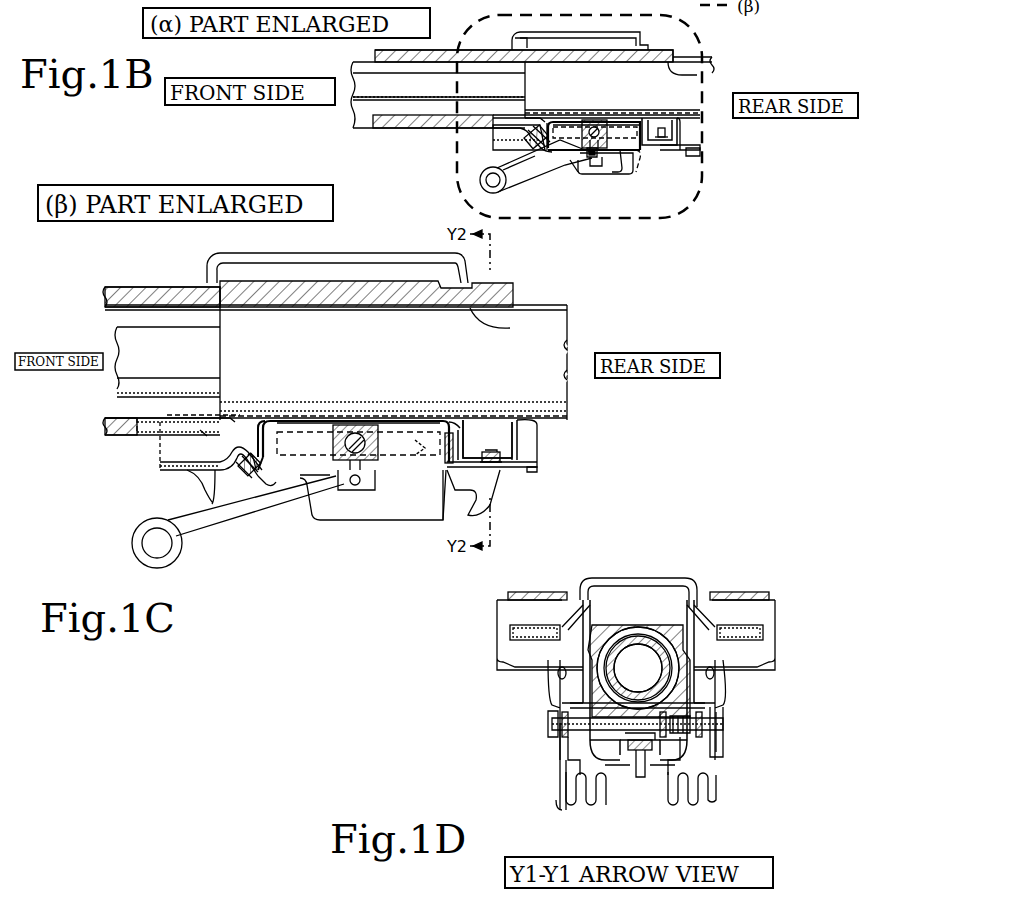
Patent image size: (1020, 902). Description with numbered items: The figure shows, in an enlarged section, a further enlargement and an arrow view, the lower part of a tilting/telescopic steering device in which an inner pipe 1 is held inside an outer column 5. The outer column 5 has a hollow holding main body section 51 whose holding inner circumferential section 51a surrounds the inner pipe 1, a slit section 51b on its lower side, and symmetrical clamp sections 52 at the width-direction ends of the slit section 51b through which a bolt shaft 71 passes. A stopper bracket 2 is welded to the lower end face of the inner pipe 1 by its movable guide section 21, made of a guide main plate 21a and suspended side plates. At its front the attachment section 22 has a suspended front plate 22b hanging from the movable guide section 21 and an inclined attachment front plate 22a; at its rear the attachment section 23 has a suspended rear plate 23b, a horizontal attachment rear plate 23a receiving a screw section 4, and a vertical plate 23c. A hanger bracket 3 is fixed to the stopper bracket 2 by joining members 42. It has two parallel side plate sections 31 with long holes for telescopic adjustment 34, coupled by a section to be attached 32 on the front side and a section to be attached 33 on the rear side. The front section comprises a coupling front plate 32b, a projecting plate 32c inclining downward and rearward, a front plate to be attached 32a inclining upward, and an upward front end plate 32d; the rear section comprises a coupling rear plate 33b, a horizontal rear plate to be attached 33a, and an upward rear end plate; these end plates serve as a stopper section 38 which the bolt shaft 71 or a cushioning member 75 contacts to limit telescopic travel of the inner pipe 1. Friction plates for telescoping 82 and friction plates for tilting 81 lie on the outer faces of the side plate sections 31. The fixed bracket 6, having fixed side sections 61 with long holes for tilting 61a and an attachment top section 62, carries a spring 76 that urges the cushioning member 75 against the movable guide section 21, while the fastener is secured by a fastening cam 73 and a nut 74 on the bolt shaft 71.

In FIG. 1B, the inner pipe 1 is at (700, 57).
In FIG. 1C, the inner pipe 1 is at (520, 307).
In FIG. 1D, the inner pipe 1 is at (645, 628).
In FIG. 1B, the stopper bracket 2 is at (628, 118).
In FIG. 1C, the stopper bracket 2 is at (436, 422).
In FIG. 1D, the stopper bracket 2 is at (680, 712).
In FIG. 1B, the hanger bracket 3 is at (478, 133).
In FIG. 1C, the hanger bracket 3 is at (160, 480).
In FIG. 1B, the screw section 4 is at (537, 137).
In FIG. 1C, the screw section 4 is at (250, 458).
In FIG. 1B, the outer column 5 is at (445, 50).
In FIG. 1C, the outer column 5 is at (340, 283).
In FIG. 1D, the outer column 5 is at (622, 620).
In FIG. 1B, the fixed bracket 6 is at (614, 173).
In FIG. 1C, the fixed bracket 6 is at (383, 518).
In FIG. 1D, the fixed bracket 6 is at (775, 622).
In FIG. 1B, the movable guide section 21 is at (548, 122).
In FIG. 1C, the movable guide section 21 is at (330, 420).
In FIG. 1B, the guide main plate 21a is at (590, 122).
In FIG. 1C, the guide main plate 21a is at (388, 417).
In FIG. 1B, the attachment section on the front side 22 is at (575, 155).
In FIG. 1C, the attachment section on the front side 22 is at (262, 437).
In FIG. 1C, the attachment front plate 22a is at (275, 480).
In FIG. 1C, the suspended front plate 22b is at (296, 418).
In FIG. 1B, the attachment section on the rear side 23 is at (690, 123).
In FIG. 1C, the attachment section on the rear side 23 is at (480, 440).
In FIG. 1C, the attachment rear plate 23a is at (512, 425).
In FIG. 1C, the suspended rear plate 23b is at (466, 430).
In FIG. 1C, the vertical plate 23c is at (520, 440).
In FIG. 1B, the side plate section 31 is at (690, 140).
In FIG. 1C, the side plate section 31 is at (537, 452).
In FIG. 1D, the side plate section 31 is at (583, 700).
In FIG. 1C, the section to be attached on the front side 32 is at (220, 500).
In FIG. 1C, the front plate to be attached 32a is at (250, 445).
In FIG. 1C, the coupling front plate 32b is at (160, 470).
In FIG. 1B, the projecting plate 32c is at (498, 140).
In FIG. 1C, the projecting plate 32c is at (215, 470).
In FIG. 1C, the front end plate 32d is at (258, 448).
In FIG. 1B, the section to be attached on the rear side 33 is at (690, 150).
In FIG. 1C, the section to be attached on the rear side 33 is at (535, 468).
In FIG. 1C, the rear plate to be attached 33a is at (450, 465).
In FIG. 1C, the coupling rear plate 33b is at (527, 470).
In FIG. 1B, the long hole for telescopic adjustment 34 is at (643, 176).
In FIG. 1C, the long hole for telescopic adjustment 34 is at (420, 440).
In FIG. 1C, the stopper section 38 is at (410, 583).
In FIG. 1B, the joining member 42 is at (575, 175).
In FIG. 1C, the joining member 42 is at (262, 478).
In FIG. 1B, the holding main body section 51 is at (580, 41).
In FIG. 1C, the holding main body section 51 is at (157, 285).
In FIG. 1D, the holding main body section 51 is at (640, 625).
In FIG. 1B, the holding inner circumferential section 51a is at (700, 75).
In FIG. 1C, the holding inner circumferential section 51a is at (540, 326).
In FIG. 1B, the slit section 51b is at (512, 115).
In FIG. 1C, the slit section 51b is at (206, 430).
In FIG. 1D, the slit section 51b is at (600, 705).
In FIG. 1C, the clamp section 52 is at (410, 500).
In FIG. 1D, the clamp section 52 is at (600, 755).
In FIG. 1B, the fixed side section 61 is at (597, 163).
In FIG. 1C, the fixed side section 61 is at (355, 500).
In FIG. 1D, the fixed side section 61 is at (575, 690).
In FIG. 1D, the long hole for tilting 61a is at (700, 724).
In FIG. 1D, the attachment top section 62 is at (685, 590).
In FIG. 1B, the bolt shaft 71 is at (593, 128).
In FIG. 1C, the bolt shaft 71 is at (355, 432).
In FIG. 1D, the bolt shaft 71 is at (642, 760).
In FIG. 1D, the fastening cam 73 is at (565, 760).
In FIG. 1D, the nut 74 is at (700, 747).
In FIG. 1B, the cushioning member 75 is at (600, 160).
In FIG. 1C, the cushioning member 75 is at (365, 492).
In FIG. 1D, the cushioning member 75 is at (650, 760).
In FIG. 1B, the spring 76 is at (520, 180).
In FIG. 1C, the spring 76 is at (185, 550).
In FIG. 1D, the spring 76 is at (560, 800).
In FIG. 1D, the friction plate for tilting 81 is at (690, 752).
In FIG. 1D, the friction plate for telescoping 82 is at (720, 712).